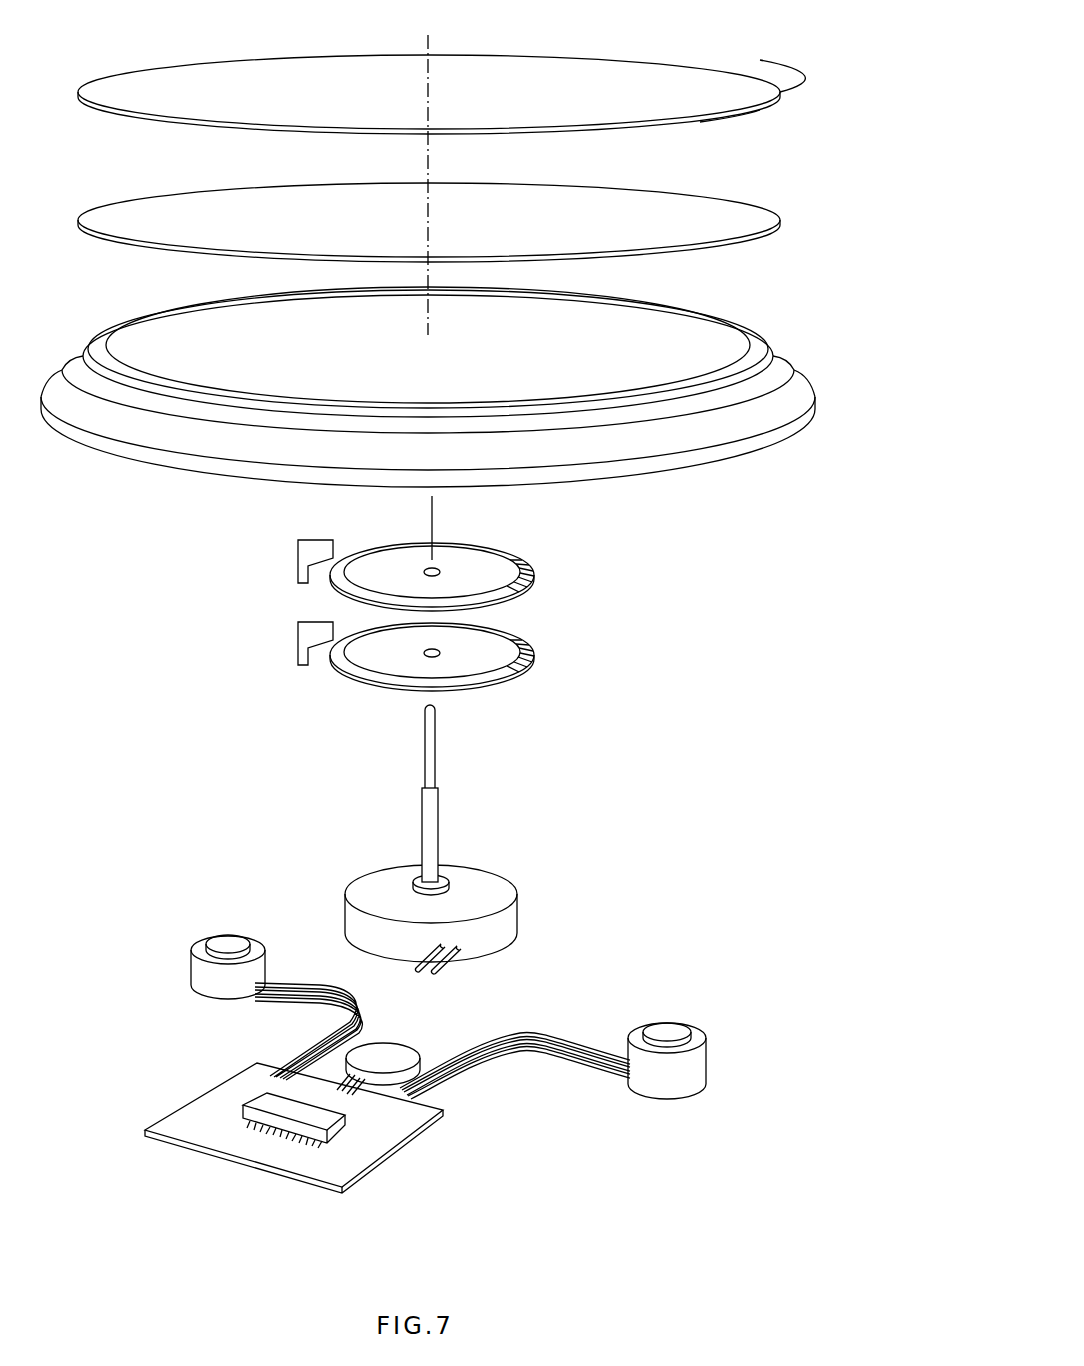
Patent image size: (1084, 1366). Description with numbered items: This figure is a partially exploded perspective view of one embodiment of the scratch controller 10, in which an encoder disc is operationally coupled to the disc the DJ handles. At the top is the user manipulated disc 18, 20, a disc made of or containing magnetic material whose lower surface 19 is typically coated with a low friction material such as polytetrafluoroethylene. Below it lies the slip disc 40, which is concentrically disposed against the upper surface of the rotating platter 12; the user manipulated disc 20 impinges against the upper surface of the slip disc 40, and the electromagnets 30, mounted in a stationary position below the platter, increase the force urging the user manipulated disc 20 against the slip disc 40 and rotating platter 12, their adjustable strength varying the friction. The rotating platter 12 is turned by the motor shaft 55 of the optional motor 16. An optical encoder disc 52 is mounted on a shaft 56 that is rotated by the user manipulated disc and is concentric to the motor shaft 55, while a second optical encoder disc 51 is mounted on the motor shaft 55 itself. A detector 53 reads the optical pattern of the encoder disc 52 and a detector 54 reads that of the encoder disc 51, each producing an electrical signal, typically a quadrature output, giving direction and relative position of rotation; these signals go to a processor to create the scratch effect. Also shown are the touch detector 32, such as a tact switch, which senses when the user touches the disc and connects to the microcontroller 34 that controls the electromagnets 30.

The scratch controller 10 is at (866, 282).
The rotating platter 12 is at (817, 370).
The motor 16 is at (518, 910).
The user manipulated disc 18 is at (782, 95).
The lower surface of user manipulated disc 19 is at (732, 126).
The user manipulated disc 20 is at (730, 90).
The electromagnets 30 is at (190, 985).
The detector 32 is at (425, 1043).
The microcontroller 34 is at (335, 1125).
The slip disc 40 is at (733, 258).
The second optical encoder disc 51 is at (536, 652).
The optical encoder disc 52 is at (536, 572).
The detector 53 is at (287, 561).
The detector 54 is at (287, 643).
The motor shaft 55 is at (440, 850).
The shaft 56 is at (436, 712).